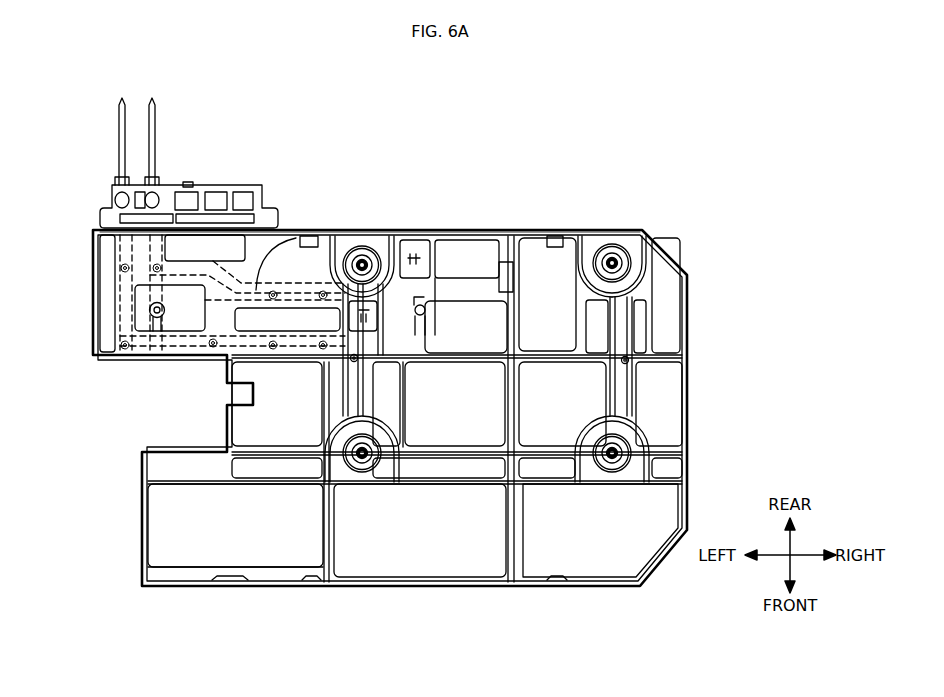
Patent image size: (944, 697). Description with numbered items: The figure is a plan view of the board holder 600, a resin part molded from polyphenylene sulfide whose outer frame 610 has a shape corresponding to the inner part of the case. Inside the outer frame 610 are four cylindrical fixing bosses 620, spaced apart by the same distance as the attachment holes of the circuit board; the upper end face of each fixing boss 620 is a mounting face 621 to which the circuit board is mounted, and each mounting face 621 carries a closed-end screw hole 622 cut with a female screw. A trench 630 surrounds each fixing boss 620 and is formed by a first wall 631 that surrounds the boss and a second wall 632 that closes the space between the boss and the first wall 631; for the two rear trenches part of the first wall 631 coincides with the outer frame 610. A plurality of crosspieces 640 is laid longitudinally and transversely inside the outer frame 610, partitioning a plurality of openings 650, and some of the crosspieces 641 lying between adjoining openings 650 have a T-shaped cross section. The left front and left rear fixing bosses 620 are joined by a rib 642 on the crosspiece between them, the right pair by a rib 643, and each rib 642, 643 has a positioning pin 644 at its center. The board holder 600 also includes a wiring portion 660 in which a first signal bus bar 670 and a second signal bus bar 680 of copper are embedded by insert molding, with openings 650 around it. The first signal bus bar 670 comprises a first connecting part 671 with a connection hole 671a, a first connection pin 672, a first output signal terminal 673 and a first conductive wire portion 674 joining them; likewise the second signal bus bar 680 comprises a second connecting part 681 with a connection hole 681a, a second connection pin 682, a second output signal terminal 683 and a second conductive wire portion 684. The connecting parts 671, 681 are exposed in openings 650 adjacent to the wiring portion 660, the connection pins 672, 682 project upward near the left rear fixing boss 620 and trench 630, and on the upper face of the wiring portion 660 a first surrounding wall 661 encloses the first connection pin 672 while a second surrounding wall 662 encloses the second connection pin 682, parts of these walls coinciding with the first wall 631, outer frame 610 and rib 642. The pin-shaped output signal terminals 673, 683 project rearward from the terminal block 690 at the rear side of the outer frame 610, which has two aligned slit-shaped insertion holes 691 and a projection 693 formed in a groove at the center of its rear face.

The board holder 600 is at (768, 172).
The outer frame 610 is at (287, 592).
The fixing boss 620 is at (372, 250).
The mounting face 621 is at (610, 246).
The screw hole 622 is at (618, 248).
The trench 630 is at (345, 235).
The first wall 631 is at (656, 243).
The second wall 632 is at (631, 240).
The crosspiece 640 is at (625, 318).
The crosspiece 641 is at (528, 277).
The rib 642 is at (338, 417).
The rib 643 is at (625, 337).
The positioning pin 644 is at (620, 367).
The opening 650 is at (241, 245).
The wiring portion 660 is at (114, 231).
The first surrounding wall 661 is at (441, 265).
The second surrounding wall 662 is at (386, 322).
The first signal bus bar 670 is at (305, 256).
The first connecting part 671 is at (433, 310).
The connection hole 671a is at (426, 307).
The first connection pin 672 is at (412, 262).
The first output signal terminal 673 is at (156, 152).
The first conductive wire portion 674 is at (287, 292).
The second signal bus bar 680 is at (246, 366).
The second connecting part 681 is at (152, 318).
The connection hole 681a is at (164, 318).
The second connection pin 682 is at (368, 327).
The second output signal terminal 683 is at (120, 150).
The second conductive wire portion 684 is at (112, 276).
The terminal block 690 is at (262, 190).
The insertion hole 691 is at (220, 215).
The projection 693 is at (190, 181).